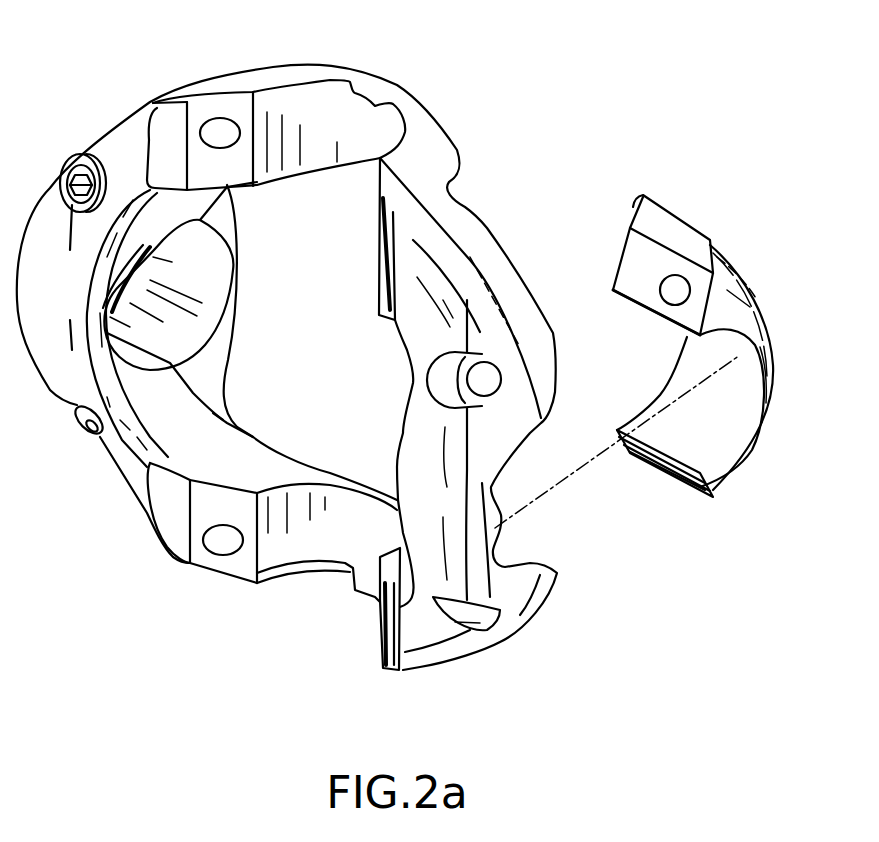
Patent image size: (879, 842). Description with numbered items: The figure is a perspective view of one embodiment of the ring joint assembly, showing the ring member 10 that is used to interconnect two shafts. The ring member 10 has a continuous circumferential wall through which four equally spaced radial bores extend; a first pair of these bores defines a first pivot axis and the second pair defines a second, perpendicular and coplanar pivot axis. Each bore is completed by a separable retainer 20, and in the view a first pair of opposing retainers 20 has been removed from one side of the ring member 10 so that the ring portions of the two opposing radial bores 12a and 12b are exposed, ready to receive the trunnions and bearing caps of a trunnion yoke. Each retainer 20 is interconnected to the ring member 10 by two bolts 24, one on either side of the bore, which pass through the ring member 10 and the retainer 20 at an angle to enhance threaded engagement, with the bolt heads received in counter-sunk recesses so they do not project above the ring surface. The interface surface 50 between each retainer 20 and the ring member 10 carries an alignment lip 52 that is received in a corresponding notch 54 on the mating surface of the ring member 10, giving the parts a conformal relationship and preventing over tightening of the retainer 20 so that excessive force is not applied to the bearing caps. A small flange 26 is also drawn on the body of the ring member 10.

The ring member 10 is at (482, 220).
The radial bore 12a is at (280, 97).
The radial bore 12b is at (340, 540).
The retainer 20 is at (709, 356).
The bolt 24 is at (83, 165).
The flange 26 is at (463, 620).
The interface surface 50 is at (633, 267).
The alignment lip 52 is at (693, 257).
The notch 54 is at (183, 130).